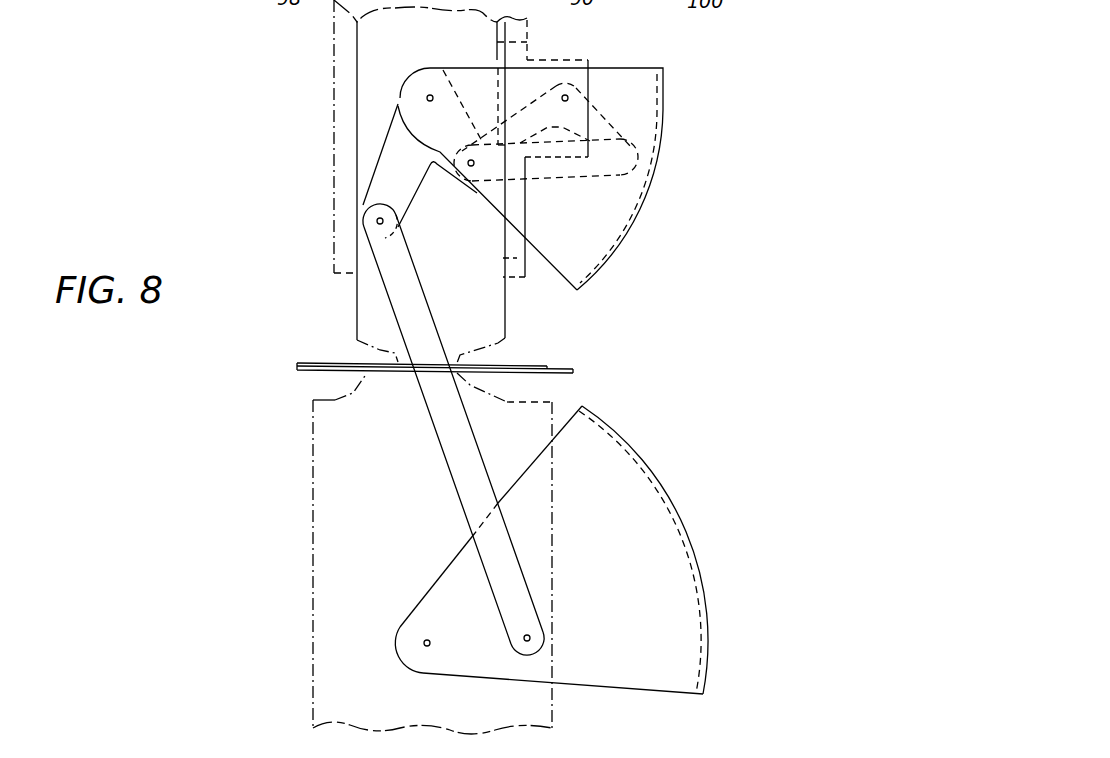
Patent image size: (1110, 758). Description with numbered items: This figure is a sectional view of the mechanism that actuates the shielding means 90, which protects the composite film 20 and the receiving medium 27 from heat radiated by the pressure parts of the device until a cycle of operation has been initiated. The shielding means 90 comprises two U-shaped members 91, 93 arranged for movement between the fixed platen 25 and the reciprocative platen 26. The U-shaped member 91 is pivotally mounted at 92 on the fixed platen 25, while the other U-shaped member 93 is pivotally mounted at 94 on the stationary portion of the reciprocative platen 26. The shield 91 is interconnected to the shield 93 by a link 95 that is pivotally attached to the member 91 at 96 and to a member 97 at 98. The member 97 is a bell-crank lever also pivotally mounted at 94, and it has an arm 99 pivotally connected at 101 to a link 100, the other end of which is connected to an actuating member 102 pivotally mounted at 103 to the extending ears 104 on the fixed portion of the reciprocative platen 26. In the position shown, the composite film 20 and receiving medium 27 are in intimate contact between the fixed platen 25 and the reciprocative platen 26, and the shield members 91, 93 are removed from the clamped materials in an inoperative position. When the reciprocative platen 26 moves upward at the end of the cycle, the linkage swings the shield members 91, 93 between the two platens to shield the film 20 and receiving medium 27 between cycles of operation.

The composite film 20 is at (337, 368).
The fixed platen 25 is at (313, 625).
The reciprocative platen 26 is at (363, 215).
The receiving medium 27 is at (367, 363).
The shielding means 90 is at (639, 262).
The U-shaped member 91 is at (692, 548).
The pivot 92 is at (424, 641).
The U-shaped member 93 is at (658, 152).
The pivot 94 is at (426, 98).
The link 95 is at (455, 447).
The pivot 96 is at (533, 633).
The bell-crank lever 97 is at (387, 162).
The pivot 98 is at (377, 223).
The arm 99 is at (439, 166).
The link 100 is at (580, 177).
The pivot 101 is at (483, 145).
The actuating member 102 is at (607, 123).
The pivot 103 is at (568, 96).
The extending ears 104 is at (547, 62).